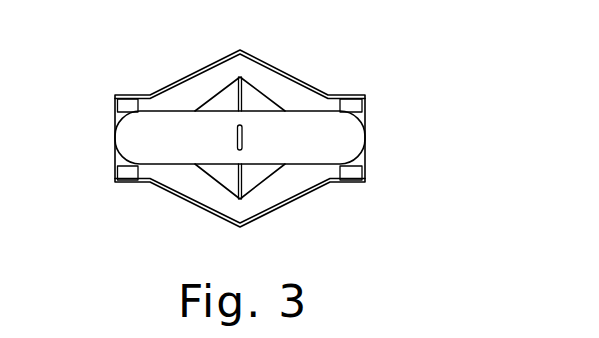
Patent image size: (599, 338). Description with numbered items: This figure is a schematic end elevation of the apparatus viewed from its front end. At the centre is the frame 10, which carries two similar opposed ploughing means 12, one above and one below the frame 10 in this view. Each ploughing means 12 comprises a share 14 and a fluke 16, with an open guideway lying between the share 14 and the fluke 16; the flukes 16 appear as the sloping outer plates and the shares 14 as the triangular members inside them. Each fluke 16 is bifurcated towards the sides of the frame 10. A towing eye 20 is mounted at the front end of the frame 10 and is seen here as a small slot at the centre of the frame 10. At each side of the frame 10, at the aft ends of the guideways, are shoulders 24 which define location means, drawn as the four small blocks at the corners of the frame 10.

The frame 10 is at (328, 151).
The ploughing means 12 is at (291, 61).
The share 14 is at (272, 102).
The fluke 16 is at (195, 82).
The towing eye 20 is at (232, 138).
The shoulders 24 is at (123, 108).